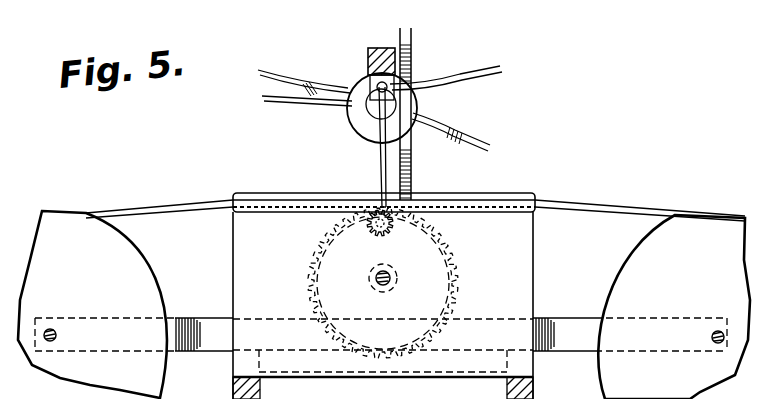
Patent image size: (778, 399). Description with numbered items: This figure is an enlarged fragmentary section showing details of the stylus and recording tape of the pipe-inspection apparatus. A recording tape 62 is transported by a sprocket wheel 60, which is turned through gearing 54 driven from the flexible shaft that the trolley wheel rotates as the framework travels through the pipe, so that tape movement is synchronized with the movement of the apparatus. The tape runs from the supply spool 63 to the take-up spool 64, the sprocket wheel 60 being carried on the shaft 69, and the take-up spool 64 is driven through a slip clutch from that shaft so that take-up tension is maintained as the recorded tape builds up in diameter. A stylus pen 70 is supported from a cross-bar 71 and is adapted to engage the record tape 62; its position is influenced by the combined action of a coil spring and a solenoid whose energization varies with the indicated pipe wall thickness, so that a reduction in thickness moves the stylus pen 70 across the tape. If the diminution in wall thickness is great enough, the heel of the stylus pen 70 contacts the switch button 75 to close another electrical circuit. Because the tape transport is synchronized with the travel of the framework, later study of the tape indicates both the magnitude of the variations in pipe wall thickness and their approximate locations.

The gearing 54 is at (398, 223).
The sprocket wheel 60 is at (454, 262).
The recording tape 62 is at (618, 211).
The supply spool 63 is at (632, 261).
The take-up spool 64 is at (130, 259).
The shaft 69 is at (377, 280).
The stylus pen 70 is at (380, 163).
The cross-bar 71 is at (385, 38).
The switch button 75 is at (372, 82).